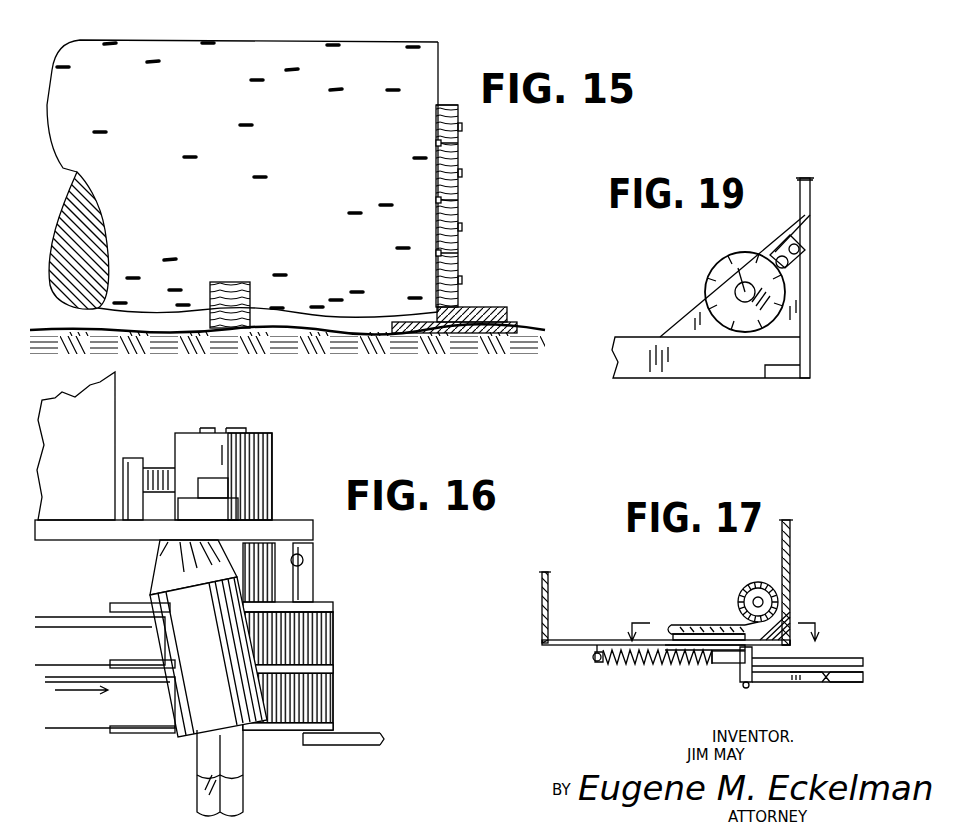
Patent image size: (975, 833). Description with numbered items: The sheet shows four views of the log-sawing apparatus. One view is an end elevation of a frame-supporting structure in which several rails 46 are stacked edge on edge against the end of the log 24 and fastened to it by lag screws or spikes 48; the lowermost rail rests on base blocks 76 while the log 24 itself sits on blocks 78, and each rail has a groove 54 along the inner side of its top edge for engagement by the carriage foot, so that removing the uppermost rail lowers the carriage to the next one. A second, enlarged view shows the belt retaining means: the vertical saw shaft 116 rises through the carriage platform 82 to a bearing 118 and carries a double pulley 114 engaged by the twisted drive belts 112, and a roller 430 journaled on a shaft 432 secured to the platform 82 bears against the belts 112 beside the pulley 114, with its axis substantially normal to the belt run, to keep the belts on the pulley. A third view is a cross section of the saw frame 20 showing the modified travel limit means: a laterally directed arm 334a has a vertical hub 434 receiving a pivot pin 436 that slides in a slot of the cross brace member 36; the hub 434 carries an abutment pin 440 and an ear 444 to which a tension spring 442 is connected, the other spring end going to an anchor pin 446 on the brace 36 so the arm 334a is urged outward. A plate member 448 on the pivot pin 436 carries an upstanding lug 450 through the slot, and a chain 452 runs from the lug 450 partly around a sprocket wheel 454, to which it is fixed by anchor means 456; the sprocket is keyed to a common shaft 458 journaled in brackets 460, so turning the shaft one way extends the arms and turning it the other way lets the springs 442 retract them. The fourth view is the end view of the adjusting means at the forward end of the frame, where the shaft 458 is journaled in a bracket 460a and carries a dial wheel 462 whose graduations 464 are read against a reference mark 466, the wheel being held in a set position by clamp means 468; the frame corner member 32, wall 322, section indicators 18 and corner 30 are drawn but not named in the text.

In FIG. 15, the log 24 is at (243, 52).
In FIG. 15, the groove 54 is at (438, 106).
In FIG. 15, the lag screws or spikes 48 is at (463, 173).
In FIG. 15, the rail 46 is at (458, 212).
In FIG. 15, the base blocks 76 is at (516, 326).
In FIG. 15, the blocks 78 is at (219, 288).
In FIG. 19, the cross brace member 36 is at (811, 200).
In FIG. 17, the cross brace member 36 is at (545, 602).
In FIG. 19, the corner member 32 is at (806, 356).
In FIG. 17, the corner member 32 is at (786, 644).
In FIG. 19, the common shaft 458 is at (743, 285).
In FIG. 17, the common shaft 458 is at (754, 598).
In FIG. 19, the dial wheel 462 is at (712, 276).
In FIG. 19, the graduations 464 is at (712, 290).
In FIG. 19, the reference mark 466 is at (798, 295).
In FIG. 19, the clamp means 468 is at (781, 250).
In FIG. 19, the bracket 460a is at (690, 319).
In FIG. 16, the frame wall 322 is at (100, 406).
In FIG. 16, the bearing 118 is at (270, 462).
In FIG. 16, the carriage platform 82 is at (288, 533).
In FIG. 16, the shaft 432 is at (162, 557).
In FIG. 16, the roller 430 is at (166, 597).
In FIG. 16, the double pulley 114 is at (318, 606).
In FIG. 16, the drive belts 112 is at (333, 682).
In FIG. 16, the saw shaft 116 is at (243, 795).
In FIG. 17, the frame 20 is at (540, 592).
In FIG. 17, the tray corner 30 is at (551, 645).
In FIG. 17, the section line 18 is at (725, 625).
In FIG. 17, the sprocket wheel 454 is at (758, 596).
In FIG. 17, the anchor means 456 is at (743, 592).
In FIG. 17, the chain 452 is at (700, 624).
In FIG. 17, the upstanding lug 450 is at (672, 630).
In FIG. 17, the pivot pin 436 is at (741, 625).
In FIG. 17, the brackets 460 is at (778, 634).
In FIG. 17, the ear 444 is at (726, 663).
In FIG. 17, the tension spring 442 is at (641, 663).
In FIG. 17, the anchor pin 446 is at (598, 662).
In FIG. 17, the plate member 448 is at (690, 664).
In FIG. 17, the vertical hub 434 is at (745, 672).
In FIG. 17, the abutment pin 440 is at (807, 660).
In FIG. 17, the laterally directed arm 334a is at (812, 683).